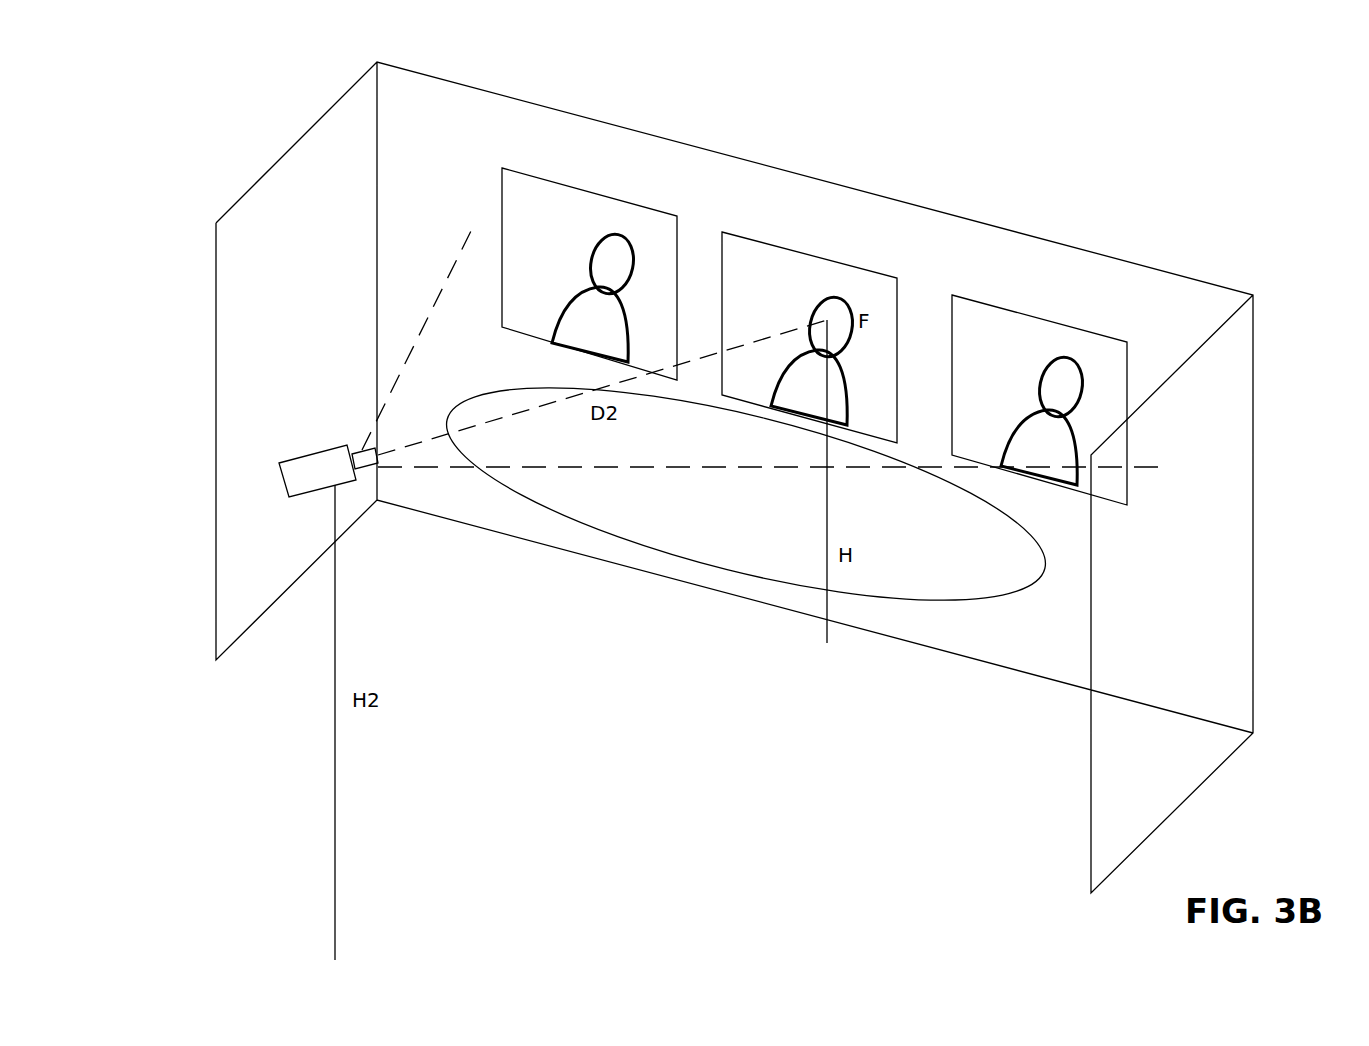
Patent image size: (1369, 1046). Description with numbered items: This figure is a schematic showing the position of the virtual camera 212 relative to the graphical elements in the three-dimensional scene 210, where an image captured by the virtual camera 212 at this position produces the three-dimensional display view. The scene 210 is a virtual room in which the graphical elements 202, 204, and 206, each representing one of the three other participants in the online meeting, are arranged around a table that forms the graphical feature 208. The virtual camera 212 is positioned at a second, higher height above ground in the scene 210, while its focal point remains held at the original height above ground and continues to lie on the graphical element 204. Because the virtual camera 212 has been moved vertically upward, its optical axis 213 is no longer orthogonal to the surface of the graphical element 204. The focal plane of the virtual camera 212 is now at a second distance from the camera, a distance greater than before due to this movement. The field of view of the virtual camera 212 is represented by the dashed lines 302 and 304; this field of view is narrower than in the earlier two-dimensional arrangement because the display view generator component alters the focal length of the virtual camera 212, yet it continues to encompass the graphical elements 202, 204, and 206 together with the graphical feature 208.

The graphical element 202 is at (566, 212).
The graphical element 204 is at (790, 275).
The graphical element 206 is at (1011, 337).
The graphical feature 208 is at (738, 532).
The 3D scene 210 is at (988, 185).
The virtual camera 212 is at (317, 453).
The optical axis 213 is at (530, 413).
The dashed line 302 is at (420, 333).
The dashed line 304 is at (1147, 467).